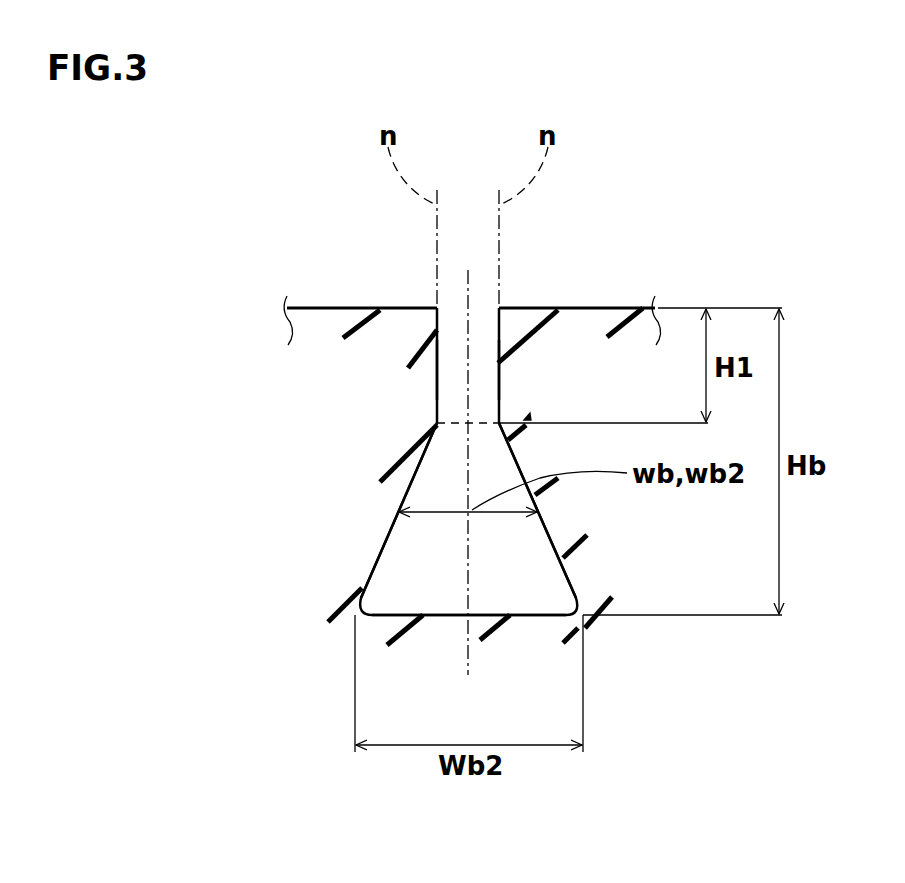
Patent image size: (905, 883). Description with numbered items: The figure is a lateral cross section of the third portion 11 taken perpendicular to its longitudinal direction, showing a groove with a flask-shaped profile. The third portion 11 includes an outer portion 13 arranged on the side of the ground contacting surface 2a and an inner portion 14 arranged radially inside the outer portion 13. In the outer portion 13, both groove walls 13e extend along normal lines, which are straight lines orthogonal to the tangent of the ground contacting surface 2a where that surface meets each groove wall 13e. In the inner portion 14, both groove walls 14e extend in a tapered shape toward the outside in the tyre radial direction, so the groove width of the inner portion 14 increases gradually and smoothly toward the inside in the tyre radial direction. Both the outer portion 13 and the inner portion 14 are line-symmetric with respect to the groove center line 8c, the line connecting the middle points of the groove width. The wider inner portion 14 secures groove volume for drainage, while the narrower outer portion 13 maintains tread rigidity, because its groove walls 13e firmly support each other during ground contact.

The ground contacting surface 2a is at (603, 306).
The third portion 11 is at (480, 333).
The outer portion 13 is at (467, 390).
The groove wall 13e is at (440, 360).
The inner portion 14 is at (425, 545).
The groove wall 14e is at (373, 575).
The groove center line 8c is at (468, 660).